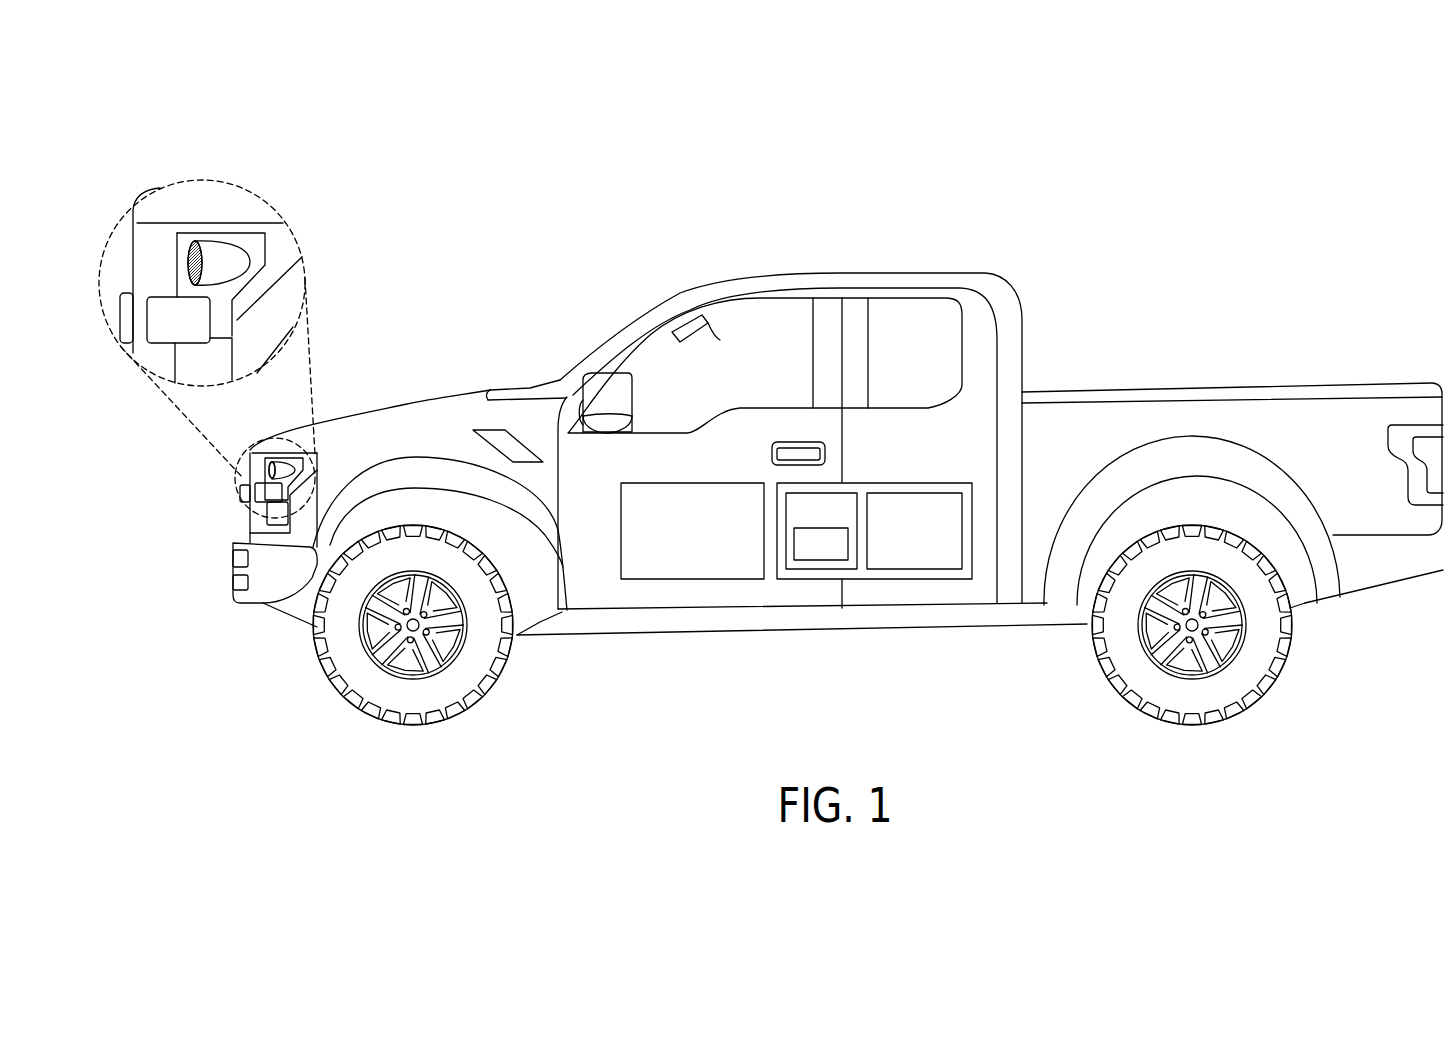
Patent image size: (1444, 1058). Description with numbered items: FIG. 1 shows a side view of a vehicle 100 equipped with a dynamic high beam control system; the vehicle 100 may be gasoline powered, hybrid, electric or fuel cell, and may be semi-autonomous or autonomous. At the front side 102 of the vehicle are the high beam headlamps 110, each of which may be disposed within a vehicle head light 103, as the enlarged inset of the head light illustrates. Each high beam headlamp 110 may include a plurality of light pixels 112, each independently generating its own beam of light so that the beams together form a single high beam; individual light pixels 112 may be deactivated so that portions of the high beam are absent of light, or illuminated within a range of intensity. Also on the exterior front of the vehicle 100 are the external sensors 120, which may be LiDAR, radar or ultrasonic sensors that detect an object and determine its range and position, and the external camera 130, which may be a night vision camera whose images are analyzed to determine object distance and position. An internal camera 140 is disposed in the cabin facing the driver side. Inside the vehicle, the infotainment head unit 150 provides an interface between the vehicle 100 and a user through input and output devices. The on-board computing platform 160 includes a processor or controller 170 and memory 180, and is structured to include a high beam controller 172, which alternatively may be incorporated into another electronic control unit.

The vehicle 100 is at (1056, 226).
The front side 102 is at (454, 318).
The vehicle head light 103 is at (245, 470).
The high beam headlamp 110 is at (195, 240).
The light pixel 112 is at (187, 255).
The external sensor 120 is at (232, 583).
The external camera 130 is at (237, 558).
The internal camera 140 is at (712, 330).
The infotainment head unit 150 is at (694, 579).
The on-board computing platform 160 is at (873, 579).
The processor or controller 170 is at (822, 569).
The high beam controller 172 is at (804, 556).
The memory 180 is at (914, 569).